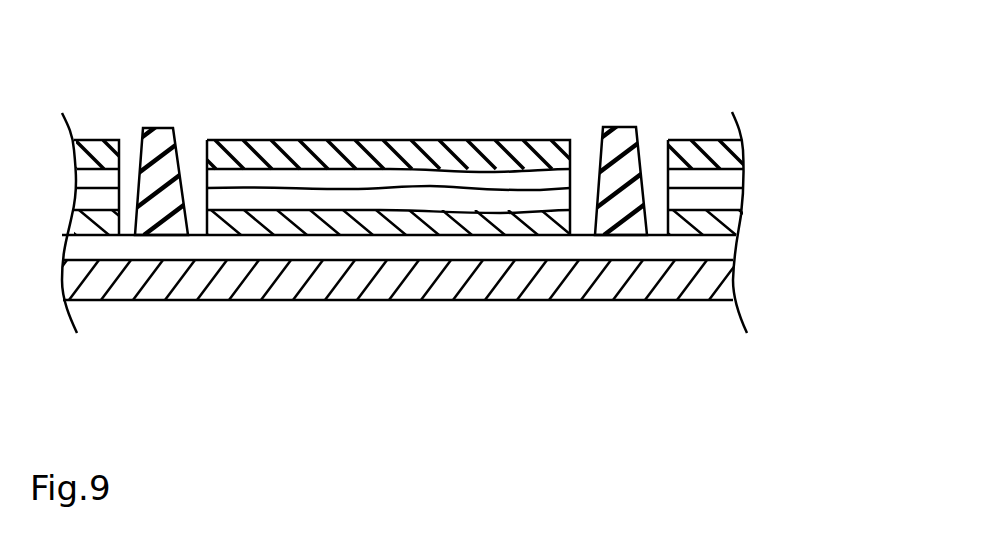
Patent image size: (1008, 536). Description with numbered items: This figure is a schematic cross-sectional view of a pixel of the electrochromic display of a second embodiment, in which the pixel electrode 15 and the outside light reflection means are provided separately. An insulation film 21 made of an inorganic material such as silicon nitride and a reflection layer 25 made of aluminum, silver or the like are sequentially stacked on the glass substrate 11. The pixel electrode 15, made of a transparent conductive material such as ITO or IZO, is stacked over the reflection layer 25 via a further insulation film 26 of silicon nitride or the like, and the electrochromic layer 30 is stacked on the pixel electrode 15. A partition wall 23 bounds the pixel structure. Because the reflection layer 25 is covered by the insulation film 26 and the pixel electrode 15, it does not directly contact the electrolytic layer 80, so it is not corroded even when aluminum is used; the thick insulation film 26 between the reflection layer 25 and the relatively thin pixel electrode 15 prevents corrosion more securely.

The electrolytic layer 80 is at (139, 52).
The electrochromic layer 30 is at (450, 145).
The pixel electrode 15 is at (348, 178).
The insulation film 26 is at (255, 198).
The reflection layer 25 is at (723, 225).
The partition wall 23 is at (618, 137).
The insulation film 21 is at (722, 248).
The glass substrate 11 is at (593, 292).